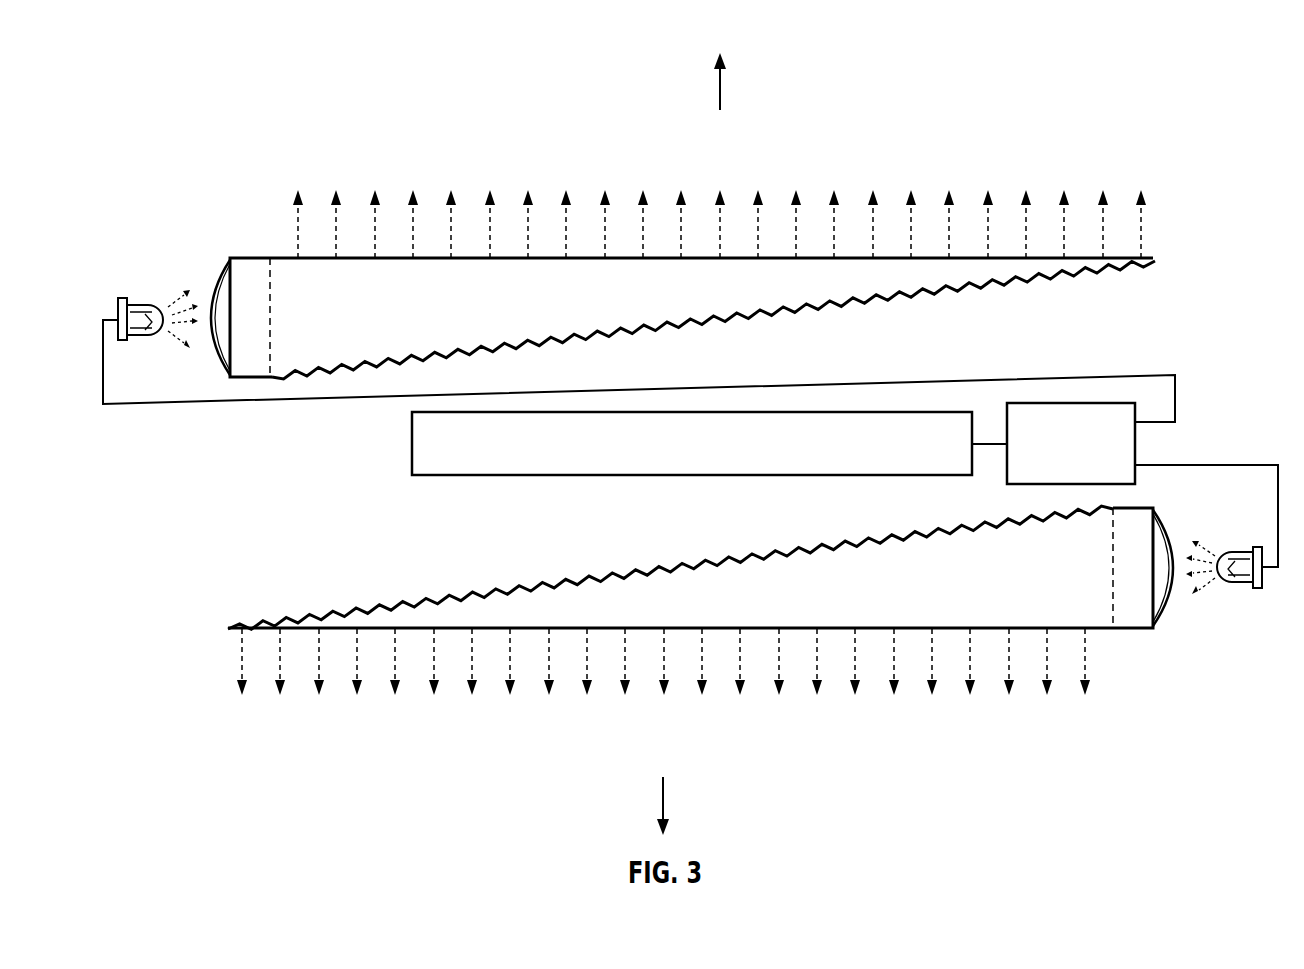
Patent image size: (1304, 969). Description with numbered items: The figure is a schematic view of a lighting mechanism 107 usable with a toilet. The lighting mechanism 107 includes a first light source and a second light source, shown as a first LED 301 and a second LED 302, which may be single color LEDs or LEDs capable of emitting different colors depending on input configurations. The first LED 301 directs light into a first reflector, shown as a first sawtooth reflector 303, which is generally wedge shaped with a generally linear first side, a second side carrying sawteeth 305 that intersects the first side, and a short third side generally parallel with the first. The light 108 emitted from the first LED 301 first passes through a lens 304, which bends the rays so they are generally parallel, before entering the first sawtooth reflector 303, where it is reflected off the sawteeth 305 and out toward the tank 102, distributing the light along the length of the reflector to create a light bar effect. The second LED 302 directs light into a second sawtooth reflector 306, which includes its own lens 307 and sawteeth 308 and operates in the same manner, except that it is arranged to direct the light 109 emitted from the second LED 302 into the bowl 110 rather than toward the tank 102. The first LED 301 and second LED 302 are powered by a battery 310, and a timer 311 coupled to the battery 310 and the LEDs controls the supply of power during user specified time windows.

The tank 102 is at (721, 82).
The lighting mechanism 107 is at (209, 162).
The light 108 is at (1145, 187).
The light 109 is at (1242, 606).
The bowl 110 is at (658, 807).
The first LED 301 is at (147, 330).
The second LED 302 is at (1237, 560).
The first sawtooth reflector 303 is at (345, 315).
The lens 304 is at (225, 288).
The sawteeth 305 is at (1158, 267).
The second sawtooth reflector 306 is at (1078, 597).
The lens 307 is at (1160, 607).
The sawteeth 308 is at (540, 575).
The battery 310 is at (710, 457).
The timer 311 is at (1090, 457).